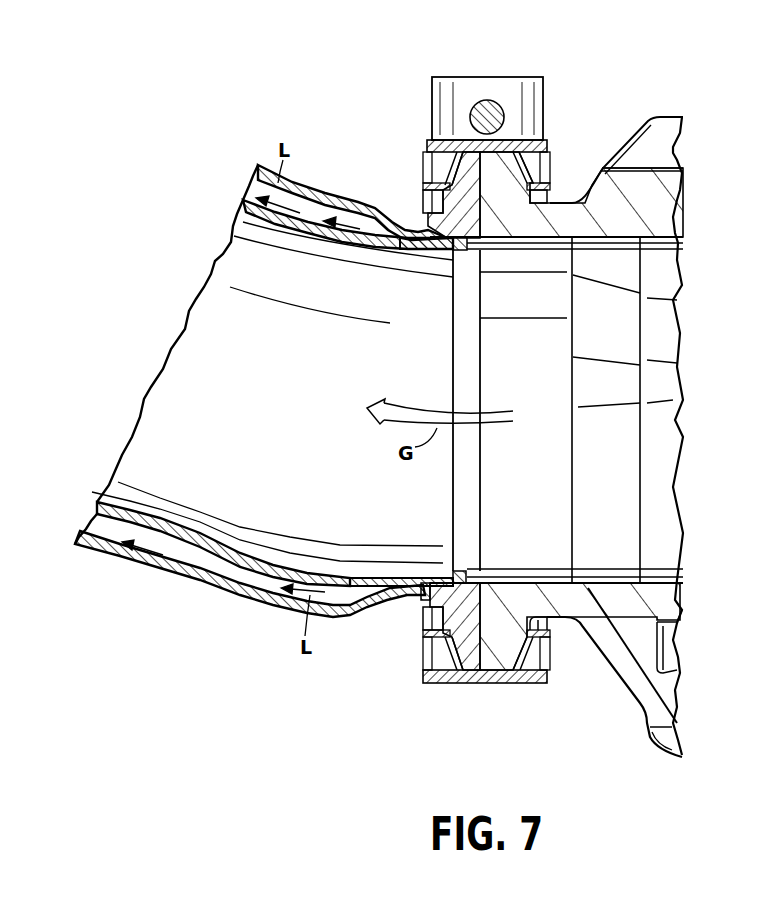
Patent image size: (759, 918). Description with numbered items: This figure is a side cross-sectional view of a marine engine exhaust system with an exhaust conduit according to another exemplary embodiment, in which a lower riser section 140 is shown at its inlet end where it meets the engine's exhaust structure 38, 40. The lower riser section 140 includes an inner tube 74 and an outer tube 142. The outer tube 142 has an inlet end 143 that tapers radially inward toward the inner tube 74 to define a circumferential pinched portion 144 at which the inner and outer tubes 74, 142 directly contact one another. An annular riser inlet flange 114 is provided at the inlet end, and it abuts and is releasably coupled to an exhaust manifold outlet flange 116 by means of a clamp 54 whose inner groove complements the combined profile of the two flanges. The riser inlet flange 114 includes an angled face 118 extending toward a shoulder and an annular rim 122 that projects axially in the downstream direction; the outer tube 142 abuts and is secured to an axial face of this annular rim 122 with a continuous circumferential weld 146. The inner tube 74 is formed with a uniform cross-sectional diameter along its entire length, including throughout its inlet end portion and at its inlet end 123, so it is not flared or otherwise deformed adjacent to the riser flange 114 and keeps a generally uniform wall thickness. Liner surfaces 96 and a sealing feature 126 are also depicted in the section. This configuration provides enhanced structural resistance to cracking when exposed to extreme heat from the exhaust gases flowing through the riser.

The turbine casing / engine static structure 38 is at (570, 405).
The turbine casing / engine static structure 40 is at (657, 112).
The clamp 54 is at (490, 77).
The inner tube 74 is at (212, 551).
The inner liner 96 is at (317, 217).
The riser inlet flange 114 is at (458, 172).
The exhaust manifold outlet flange 116 is at (524, 176).
The angled face 118 is at (452, 648).
The annular rim 122 is at (422, 577).
The inlet end 123 is at (462, 245).
The seal 126 is at (462, 571).
The lower riser section 140 is at (113, 568).
The outer tube 142 is at (203, 595).
The inlet end 143 is at (440, 247).
The circumferential pinched portion 144 is at (410, 224).
The continuous circumferential weld 146 is at (417, 601).